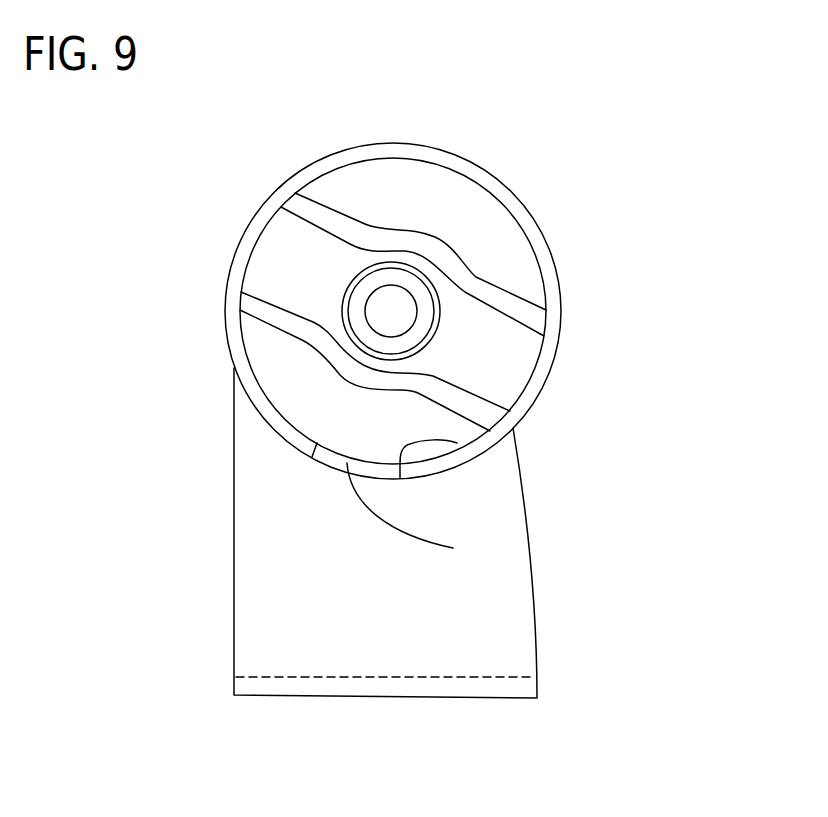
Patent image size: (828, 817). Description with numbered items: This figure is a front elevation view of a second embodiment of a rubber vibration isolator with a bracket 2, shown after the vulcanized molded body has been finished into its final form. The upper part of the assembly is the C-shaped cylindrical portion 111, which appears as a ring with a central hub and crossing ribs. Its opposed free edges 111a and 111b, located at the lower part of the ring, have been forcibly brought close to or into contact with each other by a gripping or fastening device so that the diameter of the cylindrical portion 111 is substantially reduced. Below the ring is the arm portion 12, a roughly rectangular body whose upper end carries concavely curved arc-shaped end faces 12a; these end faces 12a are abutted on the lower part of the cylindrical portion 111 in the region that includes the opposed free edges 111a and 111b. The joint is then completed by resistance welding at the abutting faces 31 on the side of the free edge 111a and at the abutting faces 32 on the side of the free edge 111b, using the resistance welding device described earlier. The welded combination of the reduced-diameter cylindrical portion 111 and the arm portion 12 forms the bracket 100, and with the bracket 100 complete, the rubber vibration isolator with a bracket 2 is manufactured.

The bracket 100 is at (575, 283).
The rubber vibration isolator with a bracket 2 is at (443, 127).
The cylindrical portion 111 is at (495, 188).
The free edge 111a is at (297, 439).
The free edge 111b is at (453, 548).
The arm portion 12 is at (515, 638).
The concavely curved arc-shaped end face 12a is at (457, 443).
The abutting face 31 is at (258, 415).
The abutting face 32 is at (440, 472).